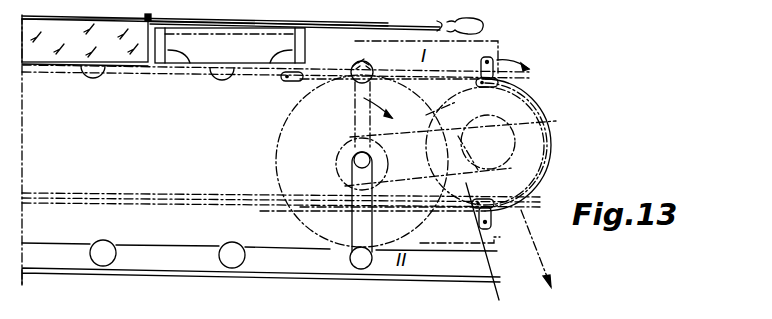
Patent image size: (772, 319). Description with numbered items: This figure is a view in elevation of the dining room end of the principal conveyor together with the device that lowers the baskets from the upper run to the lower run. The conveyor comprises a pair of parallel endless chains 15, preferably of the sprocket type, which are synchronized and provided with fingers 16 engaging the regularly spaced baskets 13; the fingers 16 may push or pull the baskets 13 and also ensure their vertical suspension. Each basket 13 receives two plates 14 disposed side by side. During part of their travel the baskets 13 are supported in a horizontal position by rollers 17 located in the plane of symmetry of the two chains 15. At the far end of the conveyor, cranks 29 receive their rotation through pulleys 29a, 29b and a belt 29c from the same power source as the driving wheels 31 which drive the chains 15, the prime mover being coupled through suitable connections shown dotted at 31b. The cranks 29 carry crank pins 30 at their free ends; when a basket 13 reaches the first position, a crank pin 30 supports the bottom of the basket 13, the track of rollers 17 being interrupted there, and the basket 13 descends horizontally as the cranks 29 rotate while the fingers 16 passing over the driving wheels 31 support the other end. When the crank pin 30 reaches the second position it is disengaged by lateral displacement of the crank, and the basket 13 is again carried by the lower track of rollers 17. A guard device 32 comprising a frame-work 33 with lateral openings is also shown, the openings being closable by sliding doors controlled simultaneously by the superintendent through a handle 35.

The guard device 32 is at (70, 16).
The frame-work 33 is at (84, 29).
The plate 14 is at (238, 45).
The handle 35 is at (460, 17).
The basket 13 is at (500, 48).
The finger 16 is at (289, 82).
The endless chain 15 is at (247, 84).
The roller 17 is at (351, 86).
The pulley 29a is at (339, 155).
The belt 29c is at (420, 127).
The pulley 29b is at (503, 116).
The wheel 31 is at (537, 130).
The crank 29 is at (352, 225).
The crank pin 30 is at (372, 262).
The connections 31b is at (541, 241).